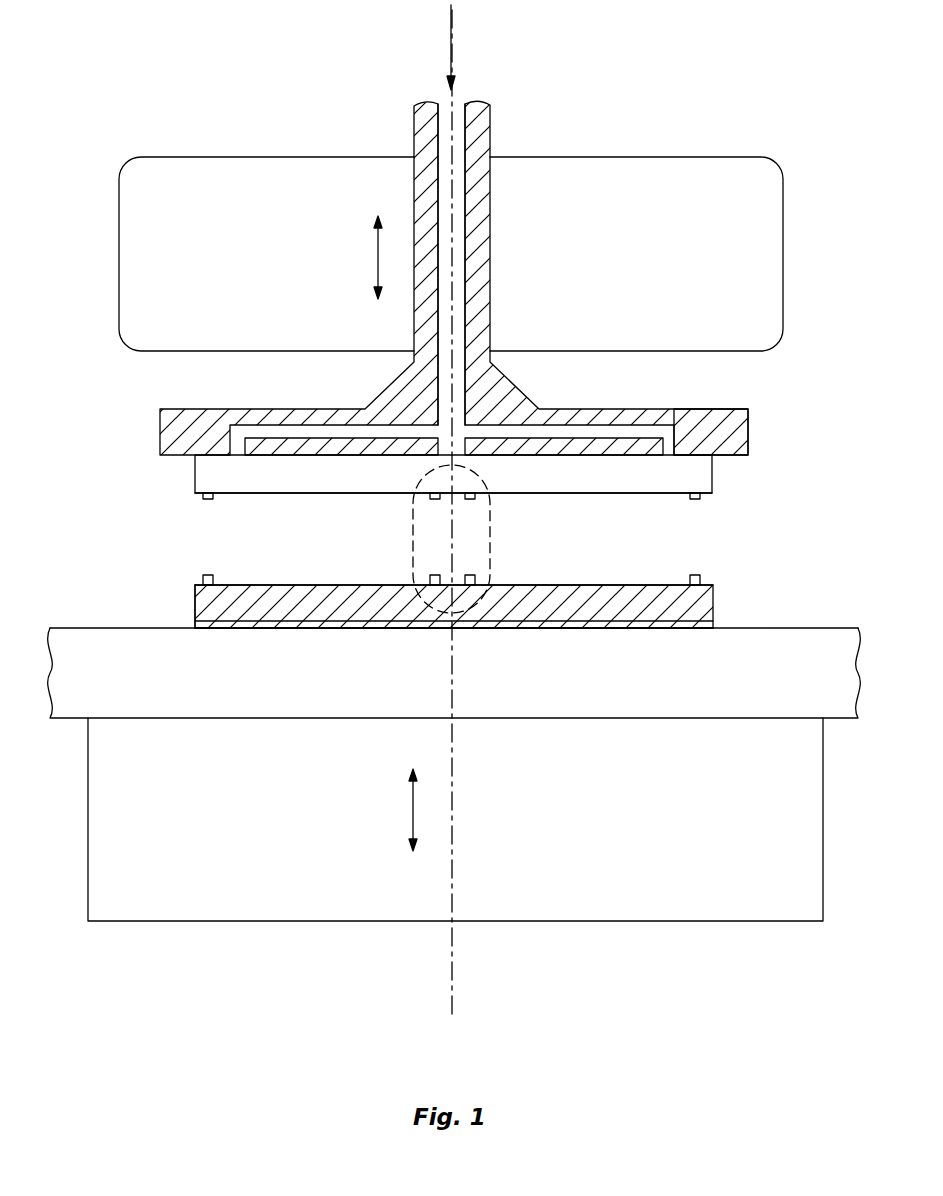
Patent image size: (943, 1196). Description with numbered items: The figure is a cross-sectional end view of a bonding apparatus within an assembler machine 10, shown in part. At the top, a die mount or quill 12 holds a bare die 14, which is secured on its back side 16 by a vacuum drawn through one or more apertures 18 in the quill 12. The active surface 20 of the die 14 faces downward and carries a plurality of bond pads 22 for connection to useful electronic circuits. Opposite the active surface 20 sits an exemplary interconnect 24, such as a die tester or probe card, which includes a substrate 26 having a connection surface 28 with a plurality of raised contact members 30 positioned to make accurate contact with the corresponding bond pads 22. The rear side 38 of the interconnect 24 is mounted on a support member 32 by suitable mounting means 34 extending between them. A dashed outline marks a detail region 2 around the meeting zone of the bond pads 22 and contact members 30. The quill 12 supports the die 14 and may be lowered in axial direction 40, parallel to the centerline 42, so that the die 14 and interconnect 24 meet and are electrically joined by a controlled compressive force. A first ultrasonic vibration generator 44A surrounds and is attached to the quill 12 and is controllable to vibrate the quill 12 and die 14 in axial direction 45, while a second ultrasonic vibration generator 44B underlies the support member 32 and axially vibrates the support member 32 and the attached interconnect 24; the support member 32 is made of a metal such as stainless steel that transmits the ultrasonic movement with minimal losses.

The assembler machine 10 is at (100, 120).
The axial direction 40 is at (452, 30).
The centerline 42 is at (446, 157).
The quill 12 is at (478, 140).
The apertures 18 is at (678, 421).
The back side 16 is at (690, 460).
The bare die 14 is at (205, 480).
The active surface 20 is at (572, 495).
The bond pads 22 is at (202, 497).
The detail region 2 is at (490, 530).
The interconnect 24 is at (249, 558).
The connection surface 28 is at (338, 585).
The rear side 38 is at (697, 603).
The substrate 26 is at (203, 602).
The raised contact members 30 is at (205, 578).
The support member 32 is at (454, 673).
The mounting means 34 is at (695, 629).
The first ultrasonic vibration generator 44A is at (451, 254).
The second ultrasonic vibration generator 44B is at (455, 819).
The axial direction 45 is at (378, 258).